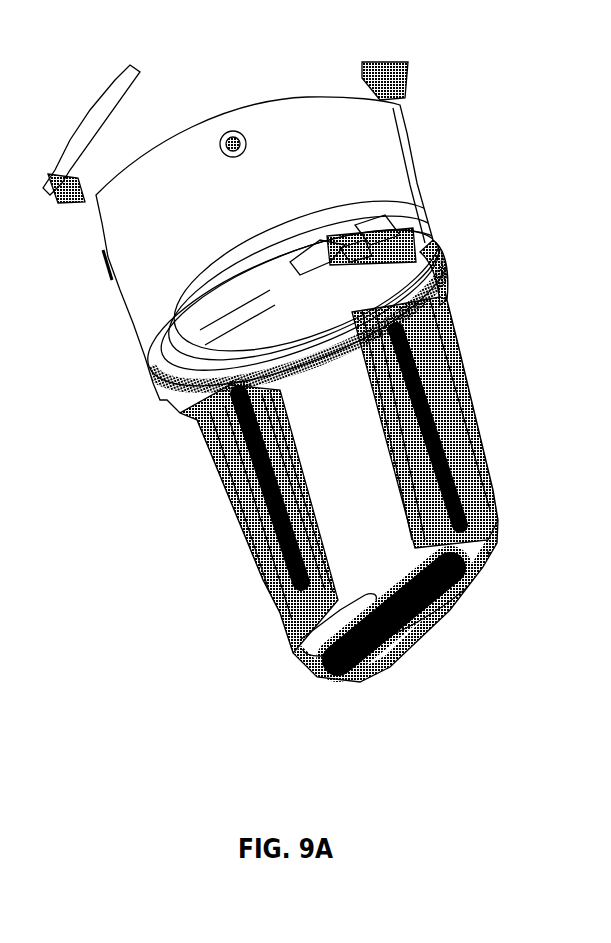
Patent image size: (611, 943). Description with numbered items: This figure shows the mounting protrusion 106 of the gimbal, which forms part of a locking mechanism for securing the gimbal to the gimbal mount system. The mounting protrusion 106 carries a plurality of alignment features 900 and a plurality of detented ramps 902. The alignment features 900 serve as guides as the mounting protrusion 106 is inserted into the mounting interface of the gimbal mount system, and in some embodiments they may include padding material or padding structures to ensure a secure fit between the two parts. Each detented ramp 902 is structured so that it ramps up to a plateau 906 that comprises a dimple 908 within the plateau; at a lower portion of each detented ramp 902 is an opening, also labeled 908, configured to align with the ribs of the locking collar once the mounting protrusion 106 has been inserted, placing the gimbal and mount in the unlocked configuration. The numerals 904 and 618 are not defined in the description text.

The mounting protrusion 106 is at (542, 419).
The alignment features 900 is at (393, 370).
The detented ramp 902 is at (308, 253).
The latch receptacle 904 is at (375, 228).
The plateau 906 is at (355, 243).
The dimple 908 is at (283, 285).
The bottom opening 618 is at (320, 622).